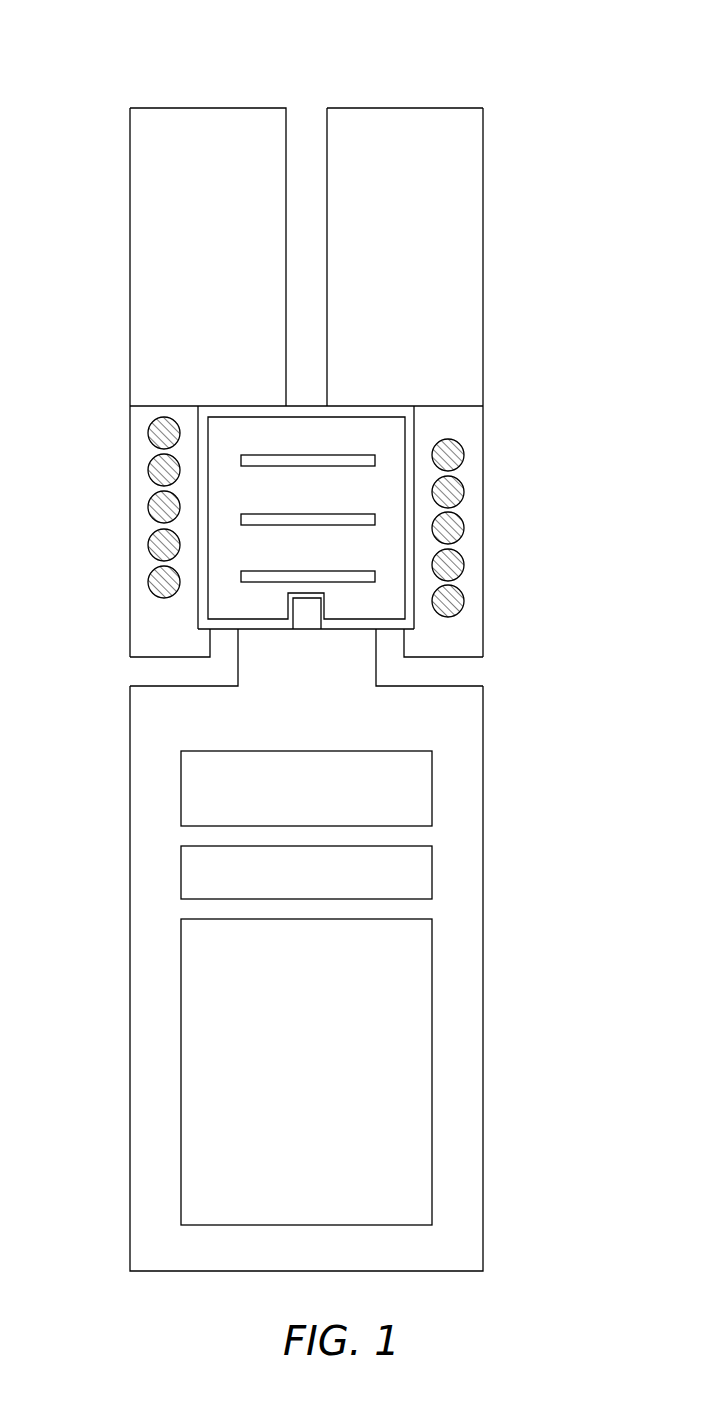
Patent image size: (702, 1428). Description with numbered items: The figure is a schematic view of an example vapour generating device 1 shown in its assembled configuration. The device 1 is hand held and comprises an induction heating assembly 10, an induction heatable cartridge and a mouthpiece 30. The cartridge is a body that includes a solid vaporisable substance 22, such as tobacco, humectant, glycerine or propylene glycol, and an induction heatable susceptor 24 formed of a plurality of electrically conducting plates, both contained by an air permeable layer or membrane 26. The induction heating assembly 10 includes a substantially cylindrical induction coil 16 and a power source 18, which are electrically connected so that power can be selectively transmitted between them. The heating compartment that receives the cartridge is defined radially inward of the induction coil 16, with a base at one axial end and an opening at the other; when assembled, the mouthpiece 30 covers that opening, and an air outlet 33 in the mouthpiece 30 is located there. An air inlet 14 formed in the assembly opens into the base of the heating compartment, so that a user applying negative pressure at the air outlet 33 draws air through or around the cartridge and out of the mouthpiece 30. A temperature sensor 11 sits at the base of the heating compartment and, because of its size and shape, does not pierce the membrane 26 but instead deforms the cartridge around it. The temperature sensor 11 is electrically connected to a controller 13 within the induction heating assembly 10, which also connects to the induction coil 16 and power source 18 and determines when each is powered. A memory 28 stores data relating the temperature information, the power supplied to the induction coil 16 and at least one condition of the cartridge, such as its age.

The vapour generating device 1 is at (143, 55).
The induction heating assembly 10 is at (130, 1253).
The temperature sensor 11 is at (308, 617).
The controller 13 is at (432, 765).
The air inlet 14 is at (136, 669).
The induction coil 16 is at (149, 434).
The power source 18 is at (432, 932).
The vaporisable substance 22 is at (383, 494).
The induction heatable susceptor 24 is at (241, 573).
The layer or membrane 26 is at (415, 424).
The memory 28 is at (432, 859).
The mouthpiece 30 is at (483, 118).
The air outlet 33 is at (305, 122).